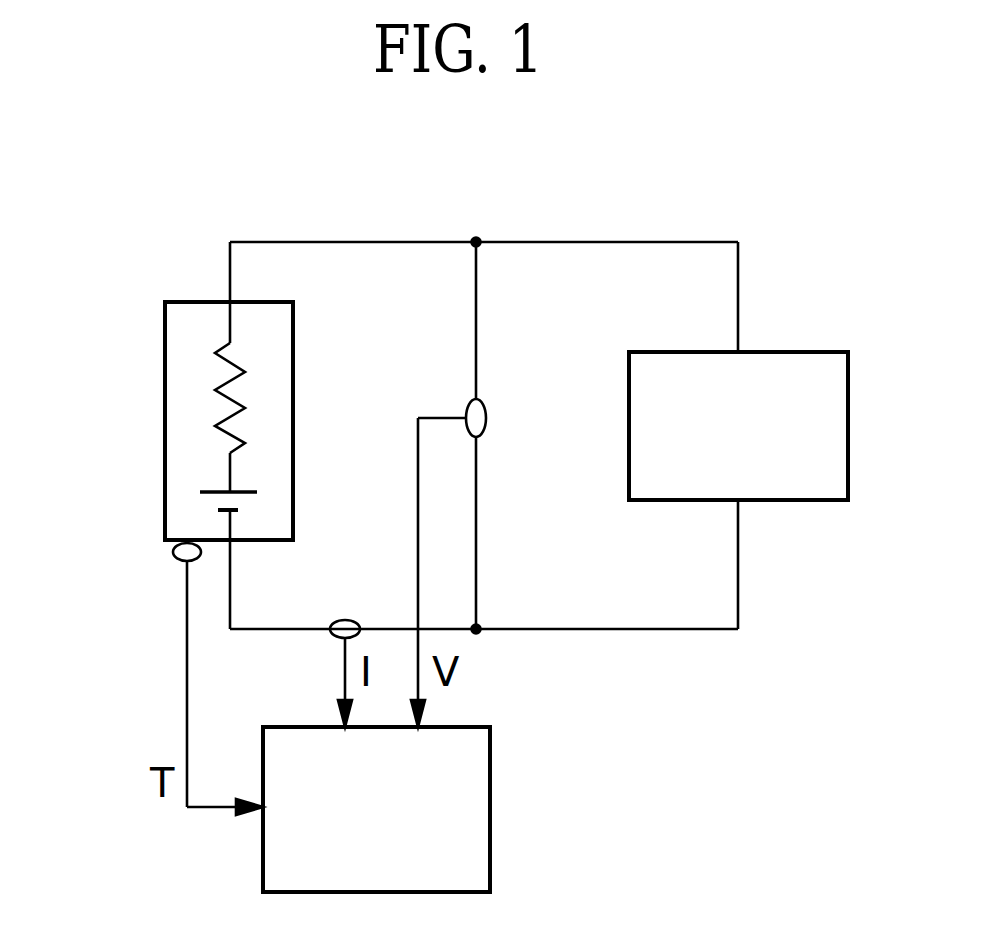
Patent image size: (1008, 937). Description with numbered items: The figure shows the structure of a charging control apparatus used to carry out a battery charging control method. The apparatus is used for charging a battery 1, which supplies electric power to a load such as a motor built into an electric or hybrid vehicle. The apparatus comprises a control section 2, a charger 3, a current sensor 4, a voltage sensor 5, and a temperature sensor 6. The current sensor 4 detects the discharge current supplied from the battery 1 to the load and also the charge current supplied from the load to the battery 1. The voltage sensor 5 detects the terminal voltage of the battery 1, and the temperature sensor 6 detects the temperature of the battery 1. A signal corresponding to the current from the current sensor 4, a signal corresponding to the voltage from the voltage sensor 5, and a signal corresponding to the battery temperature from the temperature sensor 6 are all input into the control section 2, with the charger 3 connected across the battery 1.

The battery 1 is at (165, 377).
The control section 2 is at (491, 856).
The charger 3 is at (848, 423).
The current sensor 4 is at (345, 620).
The voltage sensor 5 is at (486, 415).
The temperature sensor 6 is at (180, 560).